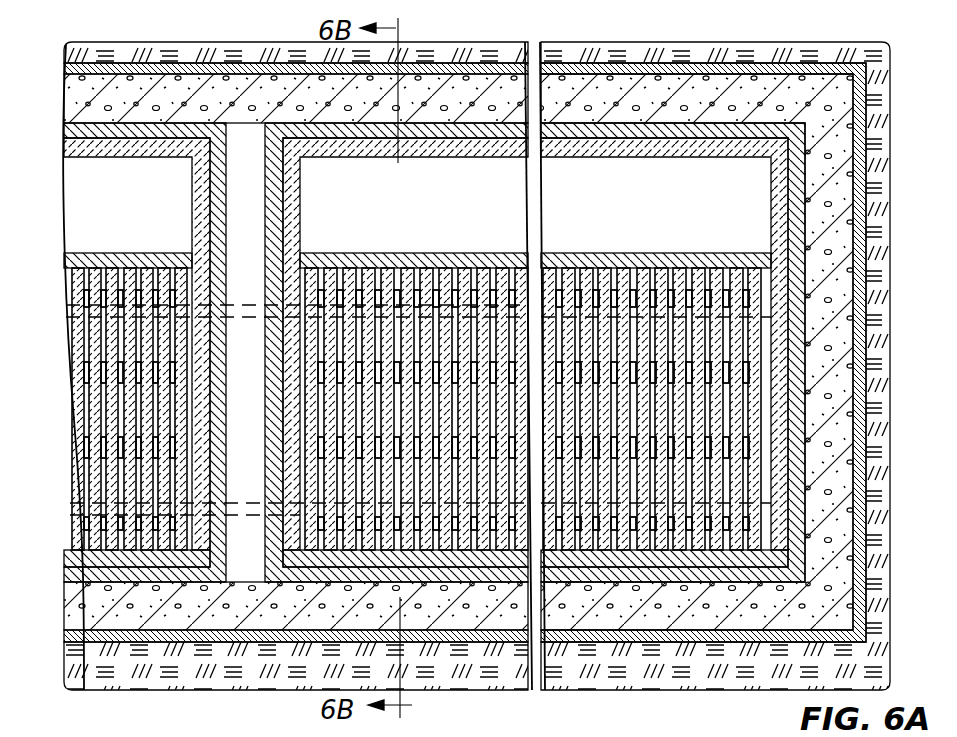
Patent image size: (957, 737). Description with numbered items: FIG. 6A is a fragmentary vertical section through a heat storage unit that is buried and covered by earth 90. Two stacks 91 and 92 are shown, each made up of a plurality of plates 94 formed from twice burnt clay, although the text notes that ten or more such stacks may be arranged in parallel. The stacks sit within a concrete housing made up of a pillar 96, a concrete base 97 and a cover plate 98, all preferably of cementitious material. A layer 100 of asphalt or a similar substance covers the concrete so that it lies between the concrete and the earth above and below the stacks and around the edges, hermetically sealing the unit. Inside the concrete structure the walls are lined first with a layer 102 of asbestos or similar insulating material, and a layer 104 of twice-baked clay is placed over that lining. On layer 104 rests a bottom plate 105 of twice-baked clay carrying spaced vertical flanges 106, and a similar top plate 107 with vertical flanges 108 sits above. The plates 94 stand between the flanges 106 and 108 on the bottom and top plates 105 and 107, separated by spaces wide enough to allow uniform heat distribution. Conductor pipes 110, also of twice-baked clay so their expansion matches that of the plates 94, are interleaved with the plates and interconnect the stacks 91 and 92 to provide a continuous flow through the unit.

The earth 90 is at (713, 55).
The stack 91 is at (93, 198).
The stack 92 is at (624, 224).
The plates 94 is at (470, 272).
The pillar 96 is at (845, 255).
The concrete base 97 is at (207, 618).
The cover plate 98 is at (263, 90).
The layer of asphalt 100 is at (608, 63).
The layer of insulating material 102 is at (263, 193).
The layer of twice-baked clay 104 is at (445, 158).
The plate 105 is at (567, 560).
The vertical flanges 106 is at (320, 545).
The top plate 107 is at (445, 257).
The vertical flanges 108 is at (368, 268).
The conductor pipes 110 is at (750, 398).